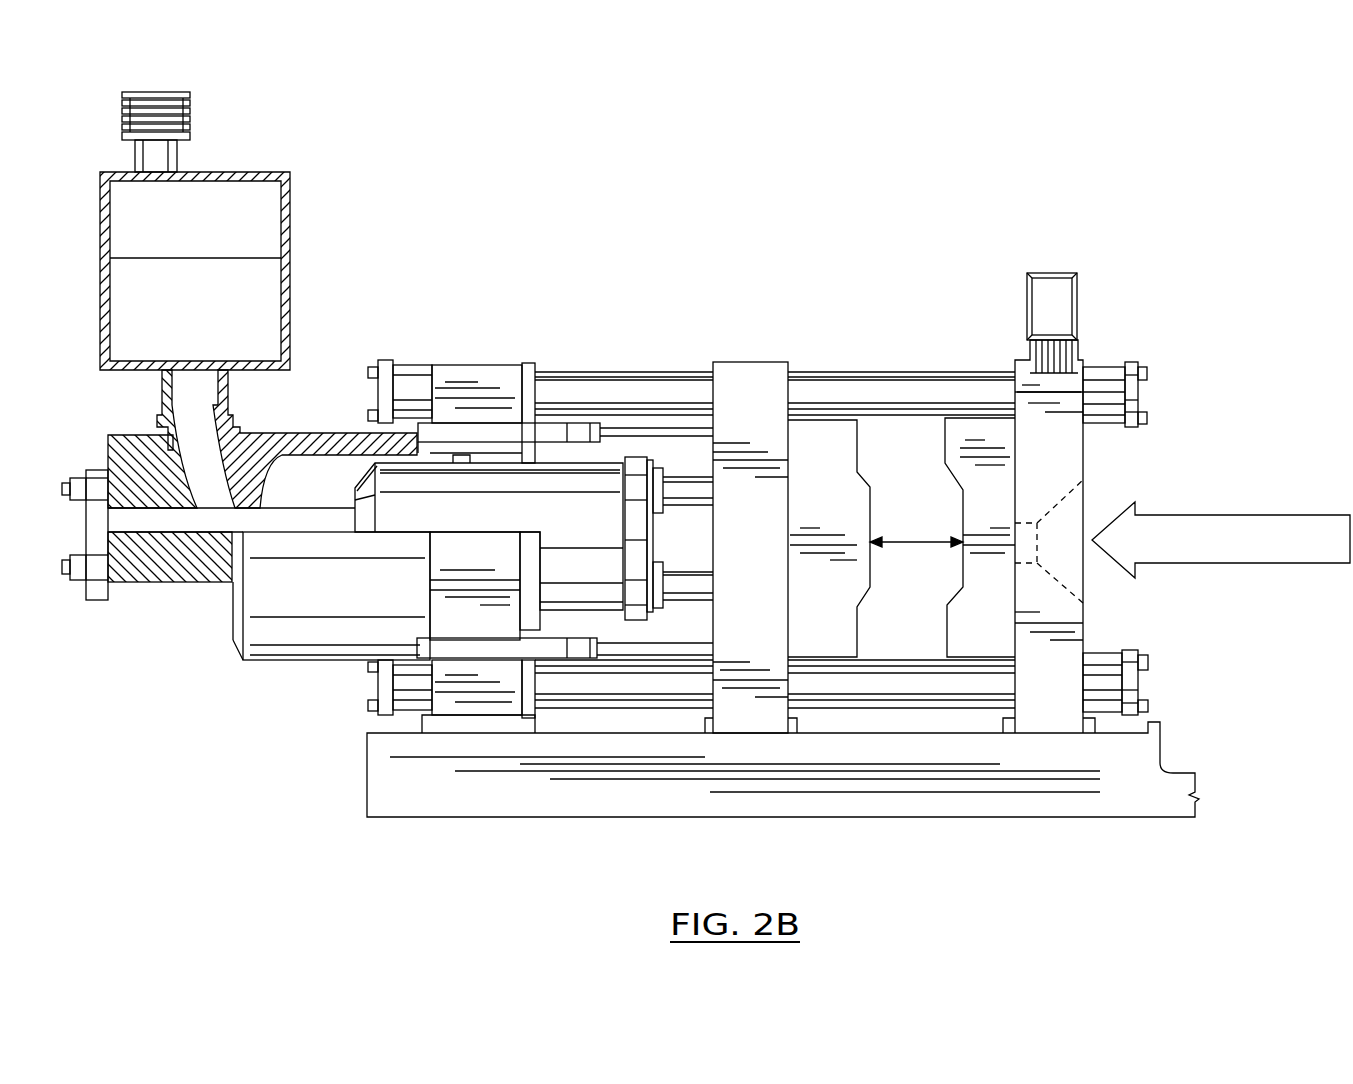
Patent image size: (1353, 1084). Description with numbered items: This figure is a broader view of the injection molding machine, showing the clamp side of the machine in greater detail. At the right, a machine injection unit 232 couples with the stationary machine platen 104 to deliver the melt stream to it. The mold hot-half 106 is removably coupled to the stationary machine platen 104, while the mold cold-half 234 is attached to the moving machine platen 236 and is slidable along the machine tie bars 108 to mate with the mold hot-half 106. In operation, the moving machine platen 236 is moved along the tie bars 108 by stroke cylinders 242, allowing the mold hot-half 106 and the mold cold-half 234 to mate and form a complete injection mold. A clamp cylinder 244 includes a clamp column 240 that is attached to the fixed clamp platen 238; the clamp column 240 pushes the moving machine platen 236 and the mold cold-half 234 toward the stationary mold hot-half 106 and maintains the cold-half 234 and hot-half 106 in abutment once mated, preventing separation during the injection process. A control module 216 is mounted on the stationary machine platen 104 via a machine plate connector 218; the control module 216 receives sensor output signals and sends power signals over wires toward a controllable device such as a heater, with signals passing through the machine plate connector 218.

The stationary machine platen 104 is at (1060, 435).
The mold hot-half 106 is at (990, 642).
The machine tie bars 108 is at (835, 370).
The control module 216 is at (1058, 290).
The machine plate connector 218 is at (1062, 365).
The machine injection unit 232 is at (1224, 556).
The mold cold-half 234 is at (830, 640).
The moving machine platen 236 is at (753, 708).
The fixed clamp platen 238 is at (480, 368).
The clamp column 240 is at (593, 505).
The stroke cylinders 242 is at (553, 430).
The clamp cylinder 244 is at (279, 520).